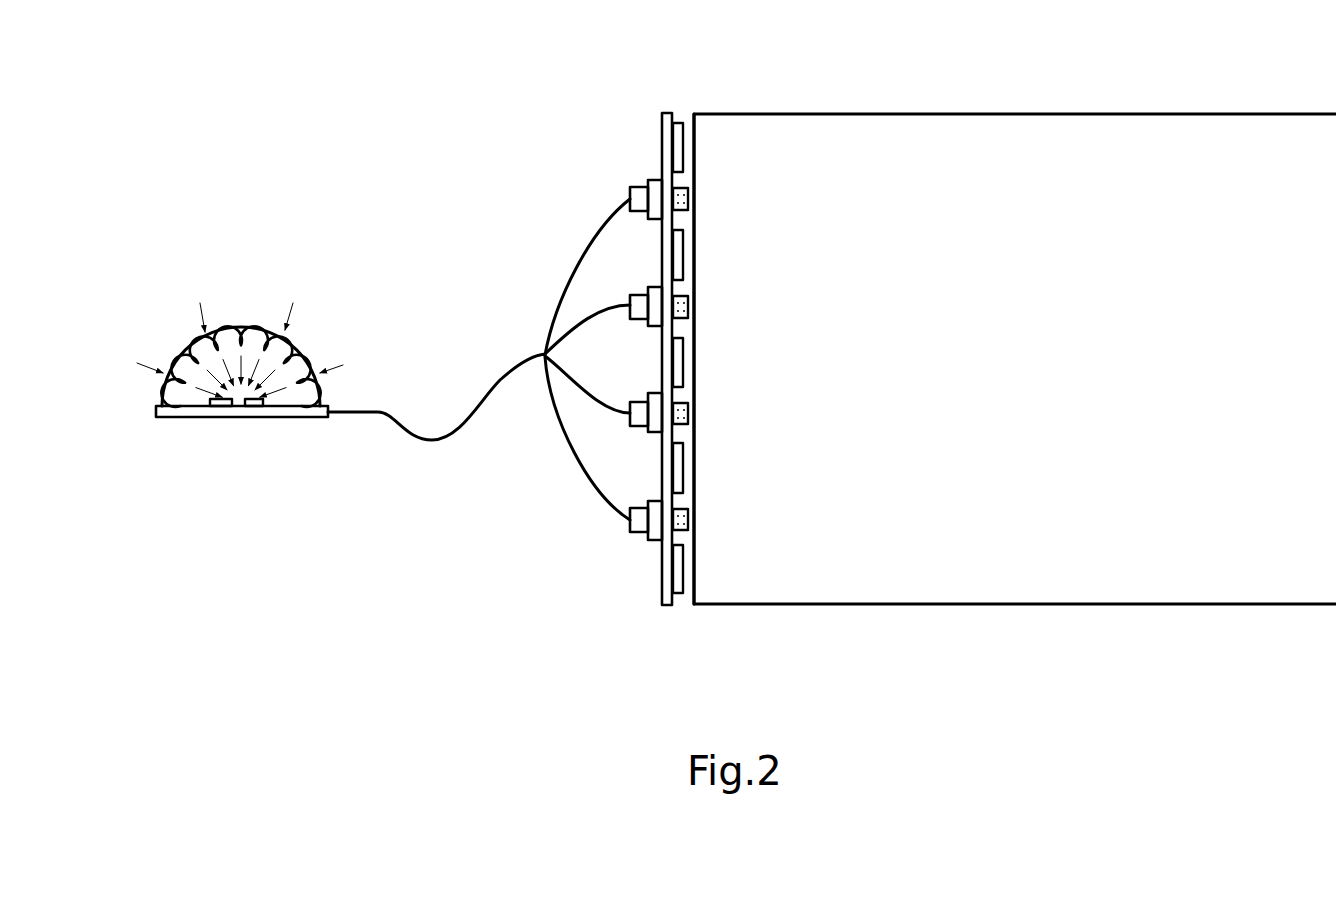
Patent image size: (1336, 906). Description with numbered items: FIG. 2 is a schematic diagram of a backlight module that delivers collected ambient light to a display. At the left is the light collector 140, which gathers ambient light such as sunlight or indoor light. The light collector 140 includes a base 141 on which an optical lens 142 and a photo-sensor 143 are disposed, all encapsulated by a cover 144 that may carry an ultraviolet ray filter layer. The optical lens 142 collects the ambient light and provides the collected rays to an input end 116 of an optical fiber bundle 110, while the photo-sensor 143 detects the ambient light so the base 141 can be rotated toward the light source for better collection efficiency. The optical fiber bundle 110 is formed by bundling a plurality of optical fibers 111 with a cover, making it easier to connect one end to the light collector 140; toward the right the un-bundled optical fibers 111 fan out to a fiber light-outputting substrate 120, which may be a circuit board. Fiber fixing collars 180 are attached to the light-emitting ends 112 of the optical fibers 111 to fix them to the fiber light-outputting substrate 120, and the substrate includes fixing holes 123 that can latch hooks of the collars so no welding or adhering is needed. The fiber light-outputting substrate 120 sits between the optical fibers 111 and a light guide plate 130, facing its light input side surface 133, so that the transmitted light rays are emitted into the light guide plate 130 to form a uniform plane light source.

The optical fiber bundle 110 is at (467, 428).
The optical fibers 111 is at (610, 216).
The light-emitting ends 112 is at (688, 530).
The input end 116 is at (253, 405).
The fiber light-outputting substrate 120 is at (668, 112).
The fixing holes 123 is at (683, 483).
The light guide plate 130 is at (990, 585).
The light input side surface 133 is at (712, 185).
The light collector 140 is at (252, 292).
The base 141 is at (186, 412).
The optical lens 142 is at (228, 332).
The photo-sensor 143 is at (222, 407).
The cover 144 is at (303, 357).
The fiber fixing collars 180 is at (656, 180).